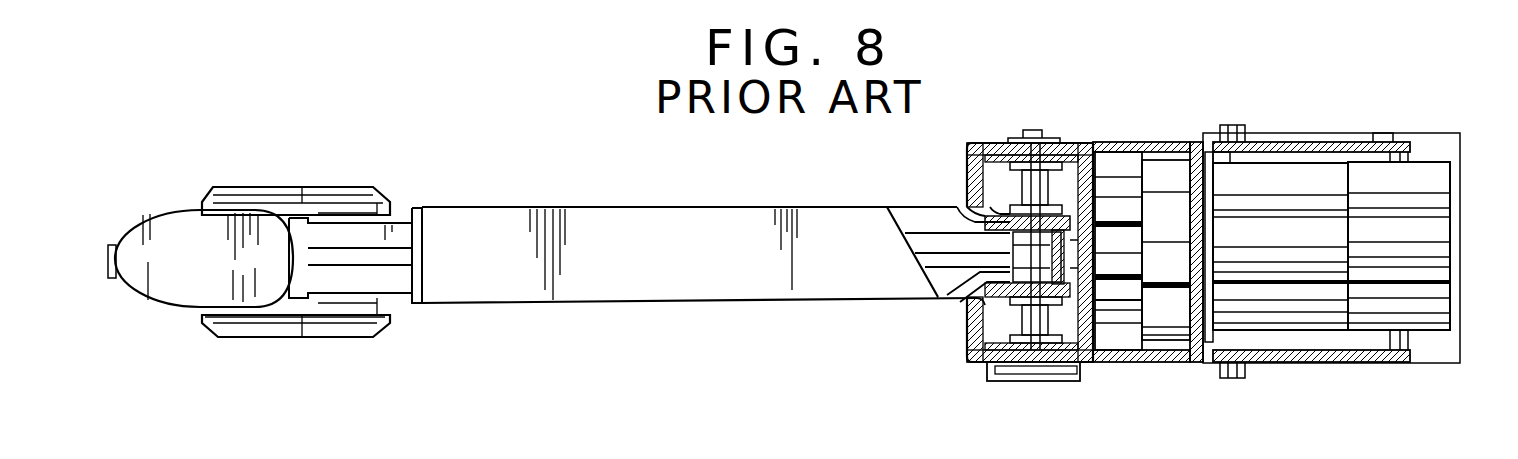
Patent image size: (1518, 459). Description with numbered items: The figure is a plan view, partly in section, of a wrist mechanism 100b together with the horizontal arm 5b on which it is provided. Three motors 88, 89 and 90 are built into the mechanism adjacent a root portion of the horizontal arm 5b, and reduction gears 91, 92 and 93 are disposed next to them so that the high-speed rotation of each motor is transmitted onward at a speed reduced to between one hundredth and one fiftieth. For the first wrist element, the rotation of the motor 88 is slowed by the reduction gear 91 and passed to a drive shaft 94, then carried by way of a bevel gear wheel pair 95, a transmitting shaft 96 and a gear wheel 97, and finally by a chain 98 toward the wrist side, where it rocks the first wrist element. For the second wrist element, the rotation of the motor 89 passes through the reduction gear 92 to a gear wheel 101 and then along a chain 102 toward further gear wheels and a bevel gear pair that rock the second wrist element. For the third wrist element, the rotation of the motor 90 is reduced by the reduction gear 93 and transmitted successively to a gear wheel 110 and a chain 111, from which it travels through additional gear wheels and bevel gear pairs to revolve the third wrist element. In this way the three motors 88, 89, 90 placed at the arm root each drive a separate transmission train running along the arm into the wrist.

The wrist mechanism 100b is at (352, 187).
The horizontal arm 5b is at (640, 207).
The gear wheel 101 is at (977, 202).
The gear wheel 110 is at (965, 227).
The chain 102 is at (948, 208).
The chain 111 is at (930, 253).
The chain 98 is at (940, 263).
The gear wheel 97 is at (953, 290).
The transmitting shaft 96 is at (1023, 312).
The bevel gear wheel pair 95 is at (1106, 348).
The drive shaft 94 is at (1135, 312).
The reduction gear 93 is at (1152, 227).
The reduction gear 92 is at (1172, 172).
The reduction gear 91 is at (1178, 330).
The motor 89 is at (1298, 188).
The motor 90 is at (1337, 237).
The motor 88 is at (1332, 318).